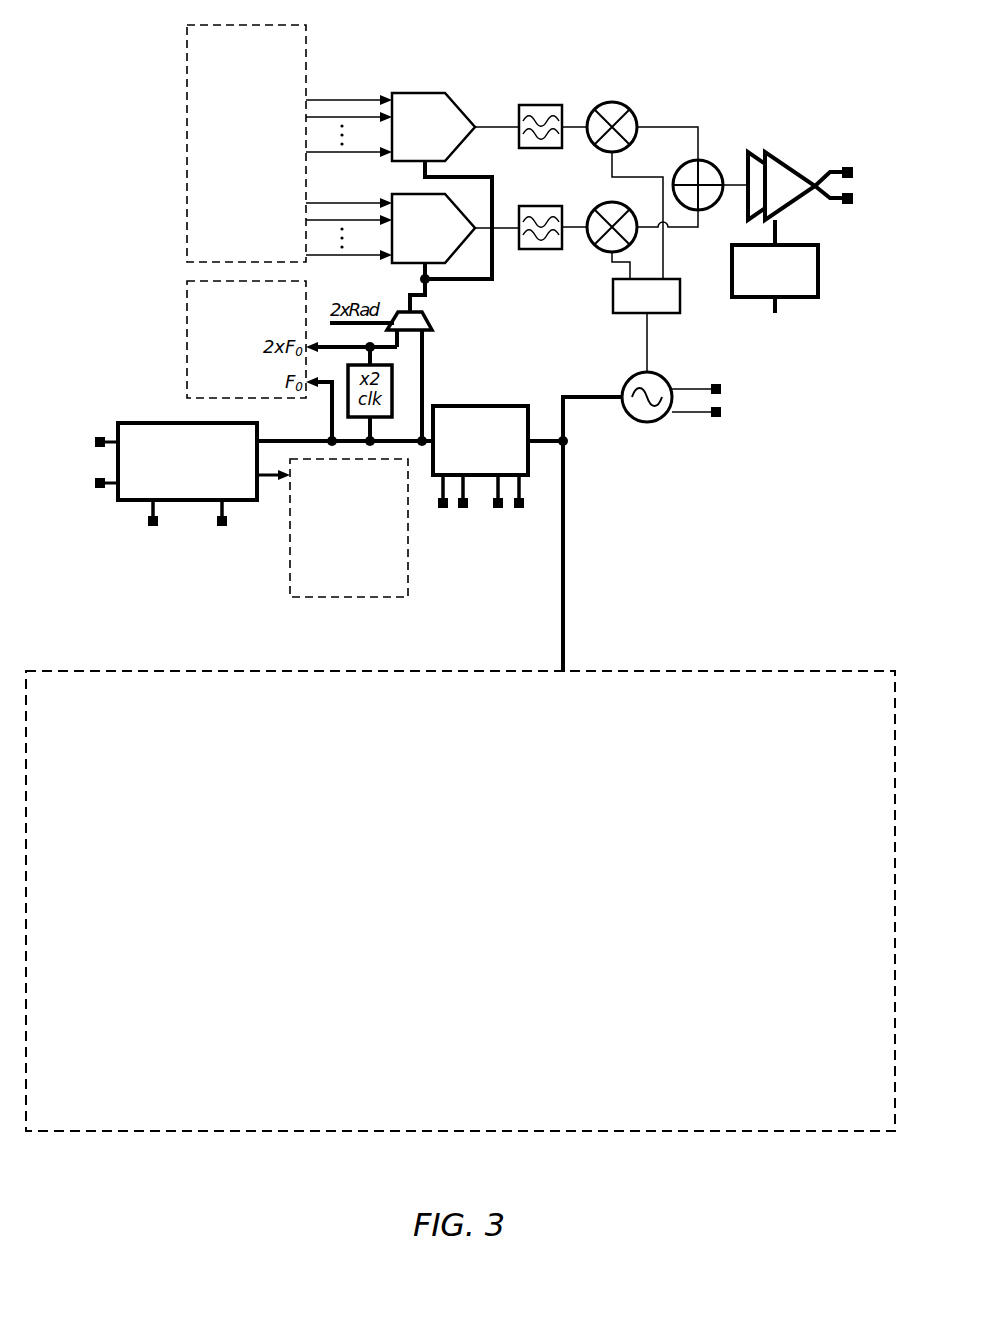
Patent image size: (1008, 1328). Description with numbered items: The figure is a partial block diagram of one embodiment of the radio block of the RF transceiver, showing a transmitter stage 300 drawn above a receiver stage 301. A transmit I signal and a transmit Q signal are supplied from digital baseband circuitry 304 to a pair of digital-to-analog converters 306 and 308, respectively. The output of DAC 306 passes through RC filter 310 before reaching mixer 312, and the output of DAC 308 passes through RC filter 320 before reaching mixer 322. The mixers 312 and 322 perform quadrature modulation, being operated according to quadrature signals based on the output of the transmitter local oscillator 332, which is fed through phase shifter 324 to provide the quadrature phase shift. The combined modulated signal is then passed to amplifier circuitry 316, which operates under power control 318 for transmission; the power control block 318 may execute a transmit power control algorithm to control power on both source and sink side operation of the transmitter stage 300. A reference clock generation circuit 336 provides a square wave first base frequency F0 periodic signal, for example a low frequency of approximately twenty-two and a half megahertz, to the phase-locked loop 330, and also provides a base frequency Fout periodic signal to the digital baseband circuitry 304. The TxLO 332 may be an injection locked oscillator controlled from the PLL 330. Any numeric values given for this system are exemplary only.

The transmitter stage 300 is at (703, 38).
The receiver stage 301 is at (885, 1121).
The digital baseband circuitry 304 is at (230, 252).
The digital-to-analog converter 306 is at (434, 158).
The digital-to-analog converter 308 is at (434, 259).
The RC filter 310 is at (542, 148).
The mixer 312 is at (634, 112).
The amplifier circuitry 316 is at (785, 207).
The power control 318 is at (818, 263).
The RC filter 320 is at (540, 206).
The mixer 322 is at (597, 255).
The phase shifter 324 is at (634, 315).
The phase-locked loop 330 is at (488, 405).
The transmitter local oscillator 332 is at (627, 378).
The reference clock generation circuit 336 is at (146, 422).